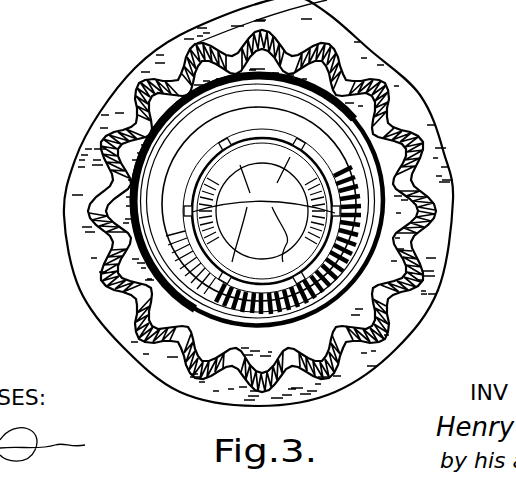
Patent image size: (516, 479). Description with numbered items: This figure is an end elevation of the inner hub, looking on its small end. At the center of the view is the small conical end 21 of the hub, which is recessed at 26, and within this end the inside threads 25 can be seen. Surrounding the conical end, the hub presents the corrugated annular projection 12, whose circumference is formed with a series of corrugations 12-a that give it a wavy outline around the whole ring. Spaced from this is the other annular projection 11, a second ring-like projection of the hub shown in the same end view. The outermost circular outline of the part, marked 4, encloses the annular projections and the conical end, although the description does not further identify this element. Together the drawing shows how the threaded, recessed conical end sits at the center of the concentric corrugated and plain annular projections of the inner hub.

The casing 4 is at (447, 265).
The other annular projection 11 is at (443, 184).
The corrugated annular projection 12 is at (437, 163).
The corrugations 12-a is at (267, 36).
The small conical end 21 is at (258, 137).
The inside threads 25 is at (274, 252).
The recess 26 is at (263, 208).